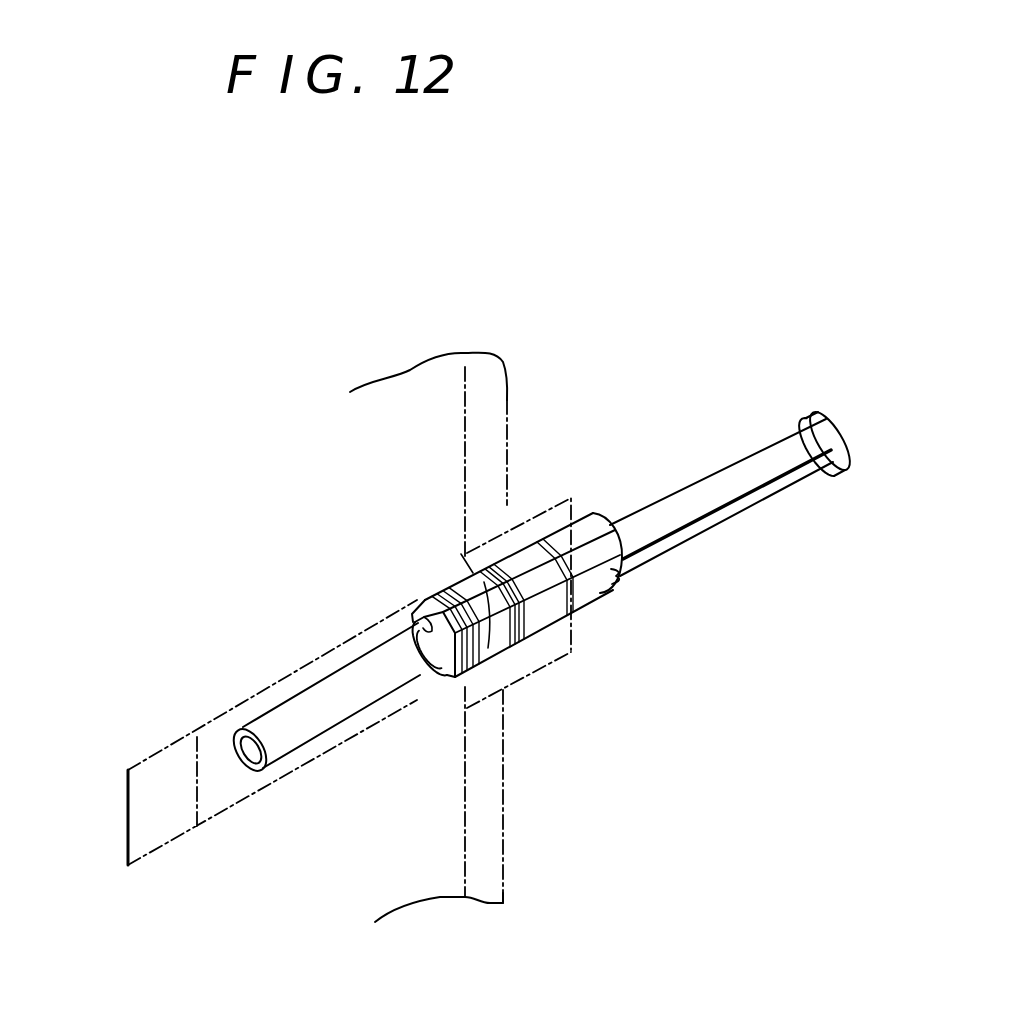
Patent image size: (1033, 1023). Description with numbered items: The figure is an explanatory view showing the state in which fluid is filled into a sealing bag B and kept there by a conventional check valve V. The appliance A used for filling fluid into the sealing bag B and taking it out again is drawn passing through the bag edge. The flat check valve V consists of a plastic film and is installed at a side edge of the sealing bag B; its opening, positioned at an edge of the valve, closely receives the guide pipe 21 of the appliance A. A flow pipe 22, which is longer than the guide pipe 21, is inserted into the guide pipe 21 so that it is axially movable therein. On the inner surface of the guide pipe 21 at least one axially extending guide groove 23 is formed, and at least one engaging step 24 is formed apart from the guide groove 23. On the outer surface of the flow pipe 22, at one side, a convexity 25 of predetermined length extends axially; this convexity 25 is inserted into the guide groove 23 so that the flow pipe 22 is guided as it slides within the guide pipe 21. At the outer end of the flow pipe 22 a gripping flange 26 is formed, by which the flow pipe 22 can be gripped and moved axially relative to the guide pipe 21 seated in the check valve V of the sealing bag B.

The guide pipe 21 is at (591, 506).
The flow pipe 22 is at (351, 671).
The guide groove 23 is at (412, 636).
The engaging step 24 is at (630, 577).
The convexity 25 is at (757, 493).
The gripping flange 26 is at (833, 410).
The appliance A is at (613, 503).
The sealing bag B is at (395, 369).
The check valve V is at (167, 833).